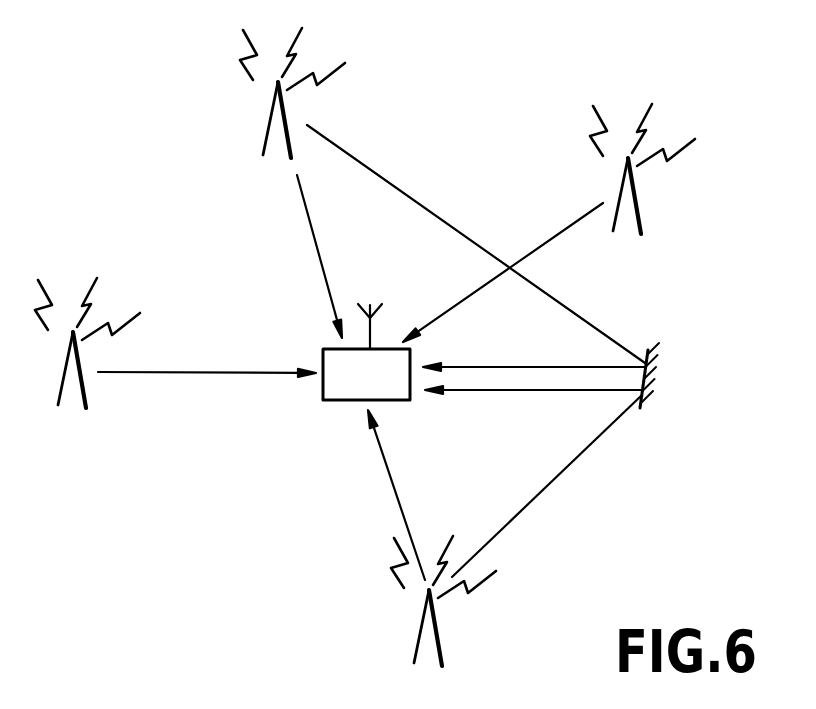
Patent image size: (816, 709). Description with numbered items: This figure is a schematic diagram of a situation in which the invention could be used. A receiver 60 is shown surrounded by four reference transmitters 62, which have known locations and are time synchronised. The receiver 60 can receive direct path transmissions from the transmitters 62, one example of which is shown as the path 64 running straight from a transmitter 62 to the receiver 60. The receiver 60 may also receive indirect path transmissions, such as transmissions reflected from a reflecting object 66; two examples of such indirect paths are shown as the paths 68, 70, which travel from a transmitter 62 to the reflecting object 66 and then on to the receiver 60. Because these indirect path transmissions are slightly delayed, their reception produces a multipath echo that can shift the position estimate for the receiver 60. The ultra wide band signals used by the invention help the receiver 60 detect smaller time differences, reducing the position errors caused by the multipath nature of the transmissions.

The receiver 60 is at (381, 385).
The reference transmitters 62 is at (278, 137).
The direct path transmission 64 is at (318, 248).
The reflecting object 66 is at (658, 387).
The indirect path transmission 68 is at (442, 220).
The indirect path transmission 70 is at (540, 490).